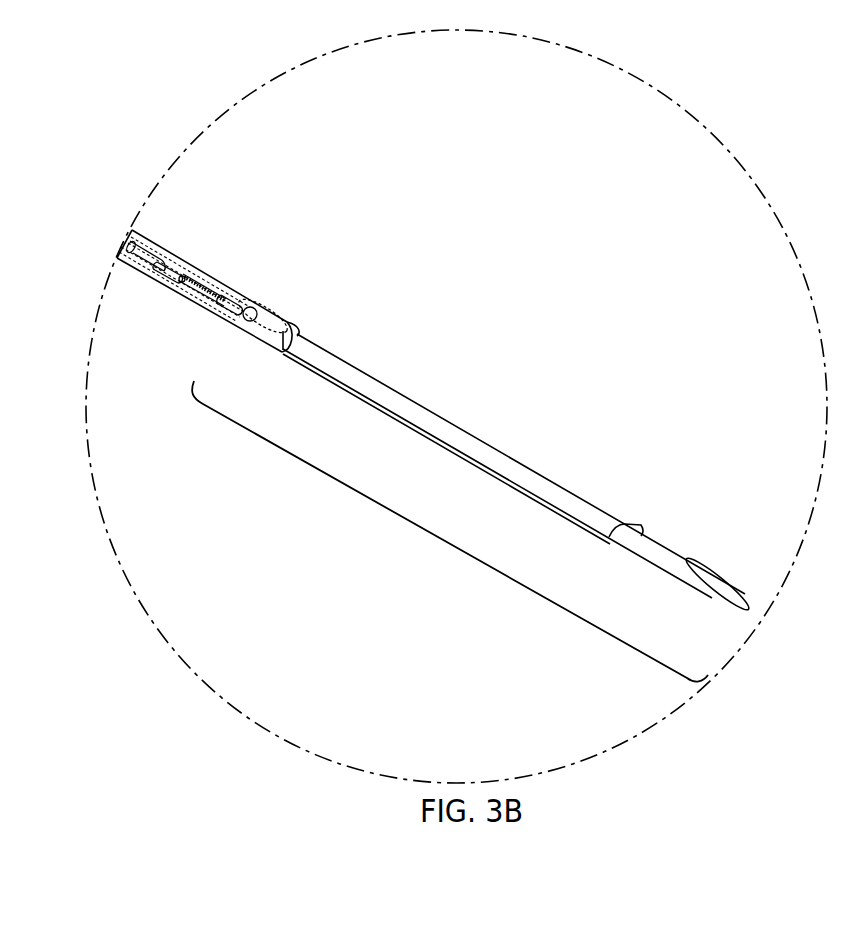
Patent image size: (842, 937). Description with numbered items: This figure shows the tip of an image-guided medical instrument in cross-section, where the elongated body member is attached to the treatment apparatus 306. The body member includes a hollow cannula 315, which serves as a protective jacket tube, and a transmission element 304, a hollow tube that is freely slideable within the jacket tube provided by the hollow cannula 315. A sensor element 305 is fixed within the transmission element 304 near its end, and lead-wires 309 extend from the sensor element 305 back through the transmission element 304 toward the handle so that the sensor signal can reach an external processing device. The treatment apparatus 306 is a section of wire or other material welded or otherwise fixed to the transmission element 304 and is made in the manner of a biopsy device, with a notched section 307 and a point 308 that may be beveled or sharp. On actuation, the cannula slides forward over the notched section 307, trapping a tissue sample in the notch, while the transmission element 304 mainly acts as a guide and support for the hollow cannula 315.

The transmission element 304 is at (212, 281).
The sensor element 305 is at (233, 289).
The treatment apparatus 306 is at (433, 537).
The notched section 307 is at (478, 450).
The point 308 is at (715, 580).
The lead-wires 309 is at (140, 243).
The hollow cannula 315 is at (181, 258).